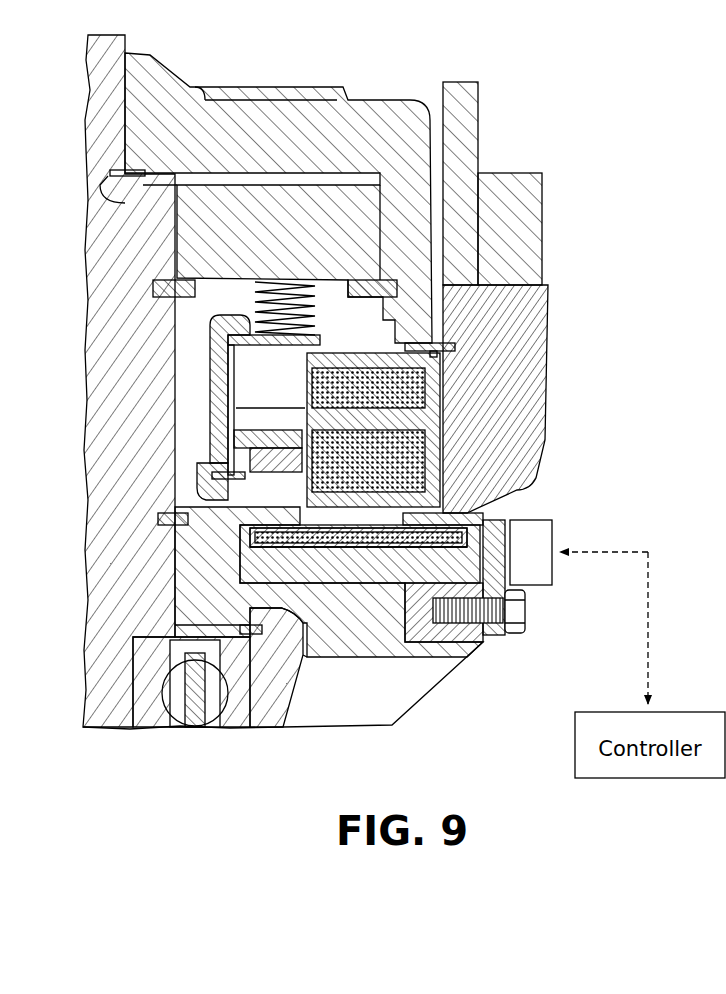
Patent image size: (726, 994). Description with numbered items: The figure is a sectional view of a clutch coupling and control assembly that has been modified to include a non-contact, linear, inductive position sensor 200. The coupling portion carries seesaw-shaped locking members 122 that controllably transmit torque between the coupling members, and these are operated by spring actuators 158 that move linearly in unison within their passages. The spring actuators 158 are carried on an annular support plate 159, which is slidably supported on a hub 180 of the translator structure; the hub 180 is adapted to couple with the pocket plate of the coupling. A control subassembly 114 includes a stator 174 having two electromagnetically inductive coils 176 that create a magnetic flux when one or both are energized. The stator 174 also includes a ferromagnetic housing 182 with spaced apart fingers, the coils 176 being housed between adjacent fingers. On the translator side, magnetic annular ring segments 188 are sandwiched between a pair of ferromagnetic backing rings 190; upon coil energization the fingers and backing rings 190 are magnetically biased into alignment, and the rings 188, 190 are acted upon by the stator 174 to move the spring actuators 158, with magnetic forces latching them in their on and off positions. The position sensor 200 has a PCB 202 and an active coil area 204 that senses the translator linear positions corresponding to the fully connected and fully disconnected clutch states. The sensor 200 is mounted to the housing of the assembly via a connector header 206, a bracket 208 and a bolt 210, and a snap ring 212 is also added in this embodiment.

The control subassembly 114 is at (552, 293).
The locking members 122 is at (296, 176).
The spring actuators 158 is at (255, 302).
The annular support plate 159 is at (343, 336).
The stator 174 is at (452, 422).
The electromagnetically inductive coils 176 is at (427, 390).
The hub 180 is at (207, 333).
The ferromagnetic housing 182 is at (481, 550).
The magnetic annular ring segments 188 is at (232, 440).
The ferromagnetic backing rings 190 is at (229, 412).
The linear inductive position sensor 200 is at (367, 522).
The PCB 202 is at (350, 553).
The active coil area 204 is at (240, 533).
The connector header 206 is at (533, 588).
The bracket 208 is at (282, 700).
The bolt 210 is at (513, 636).
The snap ring 212 is at (148, 518).